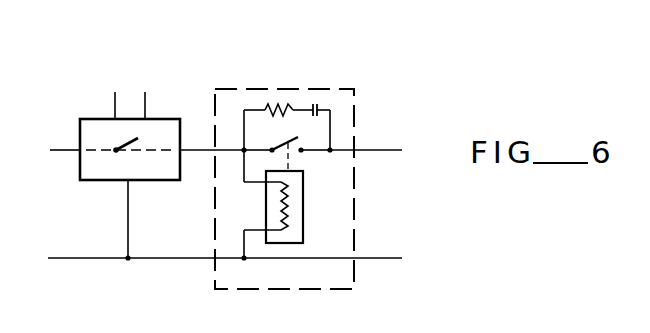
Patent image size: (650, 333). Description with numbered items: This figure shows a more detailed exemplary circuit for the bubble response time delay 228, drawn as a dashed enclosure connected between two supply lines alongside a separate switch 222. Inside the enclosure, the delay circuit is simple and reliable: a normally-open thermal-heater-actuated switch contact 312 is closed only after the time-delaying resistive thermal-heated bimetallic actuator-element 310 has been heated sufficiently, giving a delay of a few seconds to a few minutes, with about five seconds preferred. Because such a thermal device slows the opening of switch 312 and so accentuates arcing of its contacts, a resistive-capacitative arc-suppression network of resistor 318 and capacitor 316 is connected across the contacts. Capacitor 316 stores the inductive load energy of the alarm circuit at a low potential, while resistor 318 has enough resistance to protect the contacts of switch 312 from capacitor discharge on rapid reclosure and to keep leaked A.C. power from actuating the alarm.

The switch 222 is at (87, 119).
The bubble response time delay 228 is at (355, 112).
The resistive thermal-heated bimetallic actuator-element 310 is at (303, 213).
The thermal-heater-actuated switch contact 312 is at (288, 137).
The capacitor 316 is at (318, 107).
The resistor 318 is at (268, 106).